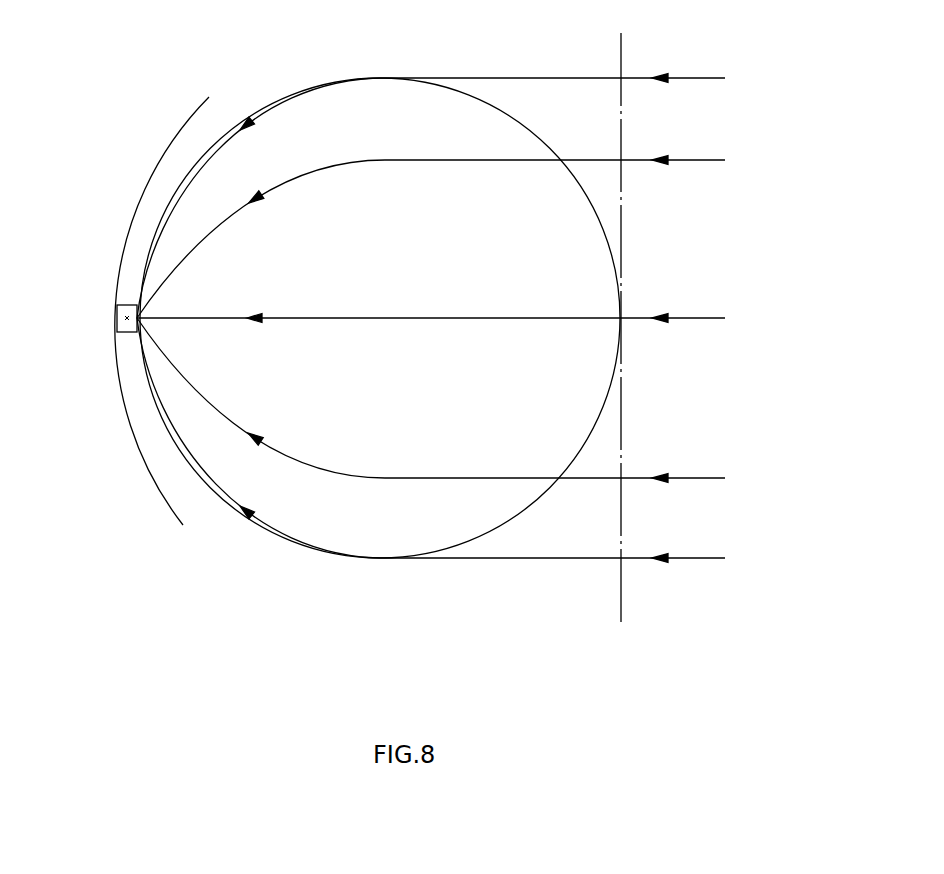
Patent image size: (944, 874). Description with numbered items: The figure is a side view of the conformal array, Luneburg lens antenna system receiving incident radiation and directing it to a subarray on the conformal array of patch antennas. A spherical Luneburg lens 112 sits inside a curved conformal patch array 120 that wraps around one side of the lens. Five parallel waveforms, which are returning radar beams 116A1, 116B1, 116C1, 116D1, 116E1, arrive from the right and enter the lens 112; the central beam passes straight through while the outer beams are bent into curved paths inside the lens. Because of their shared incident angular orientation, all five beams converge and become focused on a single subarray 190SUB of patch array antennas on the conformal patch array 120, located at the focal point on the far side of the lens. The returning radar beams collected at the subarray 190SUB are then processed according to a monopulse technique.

The Luneburg lens 112 is at (380, 343).
The conformal patch array 120 is at (132, 285).
The subarray of patch array antennas 190SUB is at (72, 333).
The waveform 116A1 is at (484, 173).
The waveform 116B1 is at (480, 209).
The waveform 116C1 is at (480, 285).
The waveform 116D1 is at (480, 400).
The waveform 116E1 is at (480, 440).